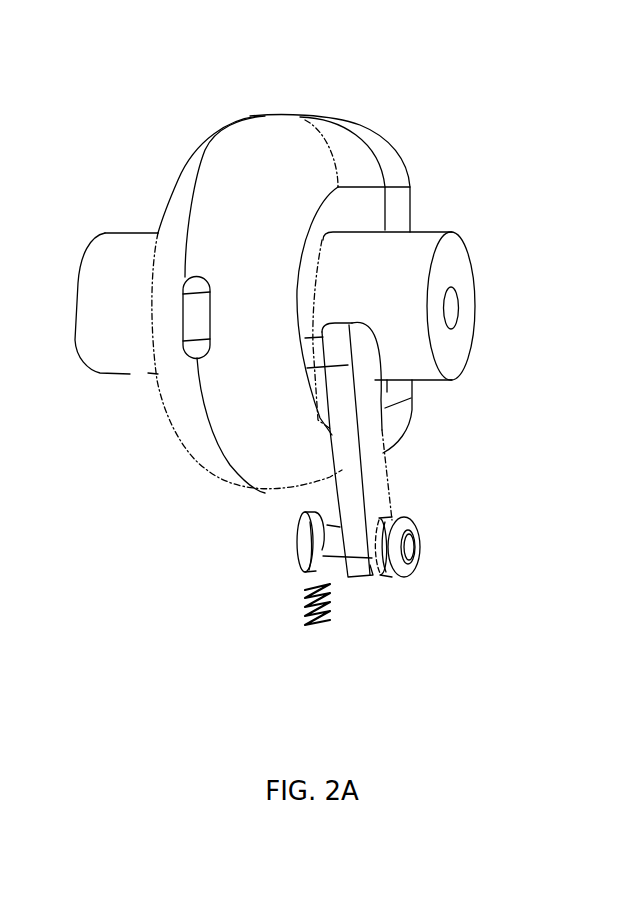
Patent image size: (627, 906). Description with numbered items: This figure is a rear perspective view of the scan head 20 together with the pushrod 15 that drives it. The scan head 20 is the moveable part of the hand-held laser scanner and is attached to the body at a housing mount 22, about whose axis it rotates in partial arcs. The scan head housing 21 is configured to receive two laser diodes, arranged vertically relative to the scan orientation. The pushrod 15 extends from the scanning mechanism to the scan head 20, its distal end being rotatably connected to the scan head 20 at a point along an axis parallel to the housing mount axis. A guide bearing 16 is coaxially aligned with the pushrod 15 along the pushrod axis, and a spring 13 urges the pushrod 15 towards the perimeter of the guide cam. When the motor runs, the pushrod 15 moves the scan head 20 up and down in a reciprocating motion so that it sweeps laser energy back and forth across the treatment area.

The spring 13 is at (300, 598).
The pushrod 15 is at (368, 430).
The guide bearing 16 is at (412, 572).
The scan head 20 is at (333, 150).
The scan head housing 21 is at (302, 123).
The housing mount 22 is at (465, 310).